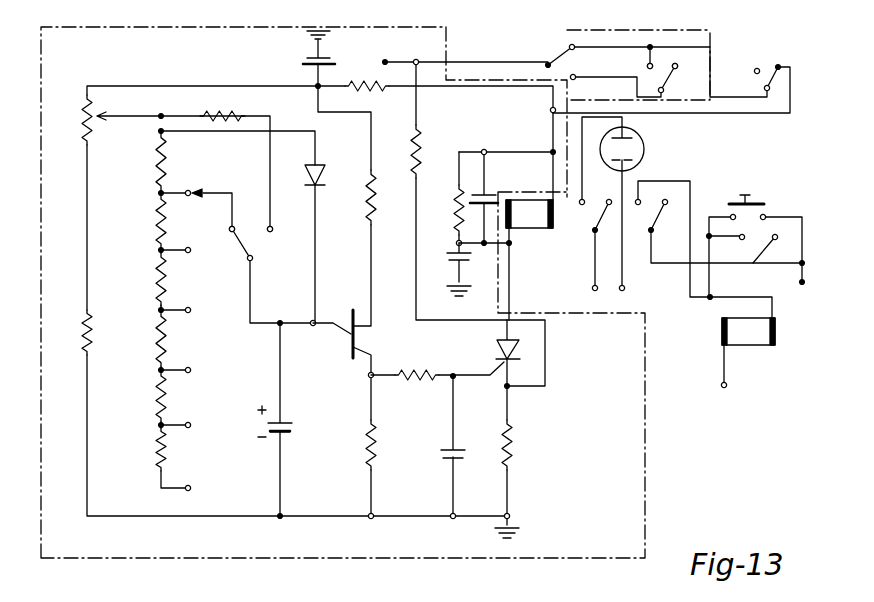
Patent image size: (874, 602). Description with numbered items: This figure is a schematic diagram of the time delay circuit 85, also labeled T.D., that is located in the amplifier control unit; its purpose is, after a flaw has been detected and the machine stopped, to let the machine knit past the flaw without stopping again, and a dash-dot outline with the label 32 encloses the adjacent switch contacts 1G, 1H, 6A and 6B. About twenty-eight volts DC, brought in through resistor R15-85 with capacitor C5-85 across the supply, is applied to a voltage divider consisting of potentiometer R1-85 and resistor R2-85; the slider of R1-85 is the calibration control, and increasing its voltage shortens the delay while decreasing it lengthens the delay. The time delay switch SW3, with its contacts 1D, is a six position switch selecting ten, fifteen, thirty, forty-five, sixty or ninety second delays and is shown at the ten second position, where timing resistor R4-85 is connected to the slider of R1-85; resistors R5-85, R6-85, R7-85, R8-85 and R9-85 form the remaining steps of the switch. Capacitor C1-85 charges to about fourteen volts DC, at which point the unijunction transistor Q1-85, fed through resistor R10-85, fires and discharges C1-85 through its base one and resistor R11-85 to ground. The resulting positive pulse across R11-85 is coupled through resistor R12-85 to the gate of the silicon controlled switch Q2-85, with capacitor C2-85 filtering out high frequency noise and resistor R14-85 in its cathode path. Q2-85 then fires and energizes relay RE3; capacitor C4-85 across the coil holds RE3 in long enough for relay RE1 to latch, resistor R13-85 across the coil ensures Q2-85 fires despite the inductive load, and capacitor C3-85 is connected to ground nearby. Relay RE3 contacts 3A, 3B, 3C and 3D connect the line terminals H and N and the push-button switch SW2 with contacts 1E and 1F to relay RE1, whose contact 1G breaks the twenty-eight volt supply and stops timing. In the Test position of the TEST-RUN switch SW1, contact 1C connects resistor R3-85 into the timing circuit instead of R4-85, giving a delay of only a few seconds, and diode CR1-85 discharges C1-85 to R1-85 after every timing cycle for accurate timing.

The switch unit 32 is at (712, 40).
The time delay circuit 85 is at (646, 520).
The time delay unit T.D. is at (646, 473).
The potentiometer R1-85 is at (94, 120).
The resistor R2-85 is at (55, 332).
The resistor R3-85 is at (222, 114).
The timing resistor R4-85 is at (133, 162).
The resistor 68K R5-85 is at (130, 221).
The resistor 200K R6-85 is at (129, 279).
The resistor 200K R7-85 is at (134, 340).
The resistor 200K R8-85 is at (133, 397).
The resistor 390K R9-85 is at (130, 452).
The resistor 390 ohm R10-85 is at (349, 202).
The resistor R11-85 is at (348, 445).
The resistor R12-85 is at (437, 376).
The resistor R13-85 is at (441, 184).
The resistor 100 ohm R14-85 is at (531, 462).
The resistor 100 ohm R15-85 is at (379, 73).
The capacitor C1-85 is at (291, 420).
The capacitor C2-85 is at (432, 447).
The capacitor .01 C3-85 is at (443, 266).
The capacitor C4-85 is at (506, 197).
The capacitor 10 mfd C5-85 is at (288, 58).
The diode CR1-85 is at (336, 172).
The unijunction transistor Q1-85 is at (355, 300).
The silicon controlled switch Q2-85 is at (528, 350).
The TEST-RUN switch SW1 is at (640, 62).
The push-button switch SW2 is at (754, 238).
The time delay switch SW3 is at (237, 321).
The relay RE1 is at (741, 363).
The relay RE3 is at (529, 236).
The contact 1C is at (267, 238).
The switch contact 1D is at (240, 223).
The switch contact 1E is at (778, 232).
The switch contact 1F is at (739, 232).
The contact 1G is at (681, 89).
The switch contact 1H is at (746, 71).
The relay contact 3A is at (605, 243).
The relay contact 3B is at (575, 211).
The relay contact 3C is at (730, 258).
The relay contact 3D is at (699, 249).
The switch contact 6A is at (683, 60).
The switch contact 6B is at (654, 60).
The hot line terminal H is at (594, 296).
The neutral terminal N is at (621, 296).